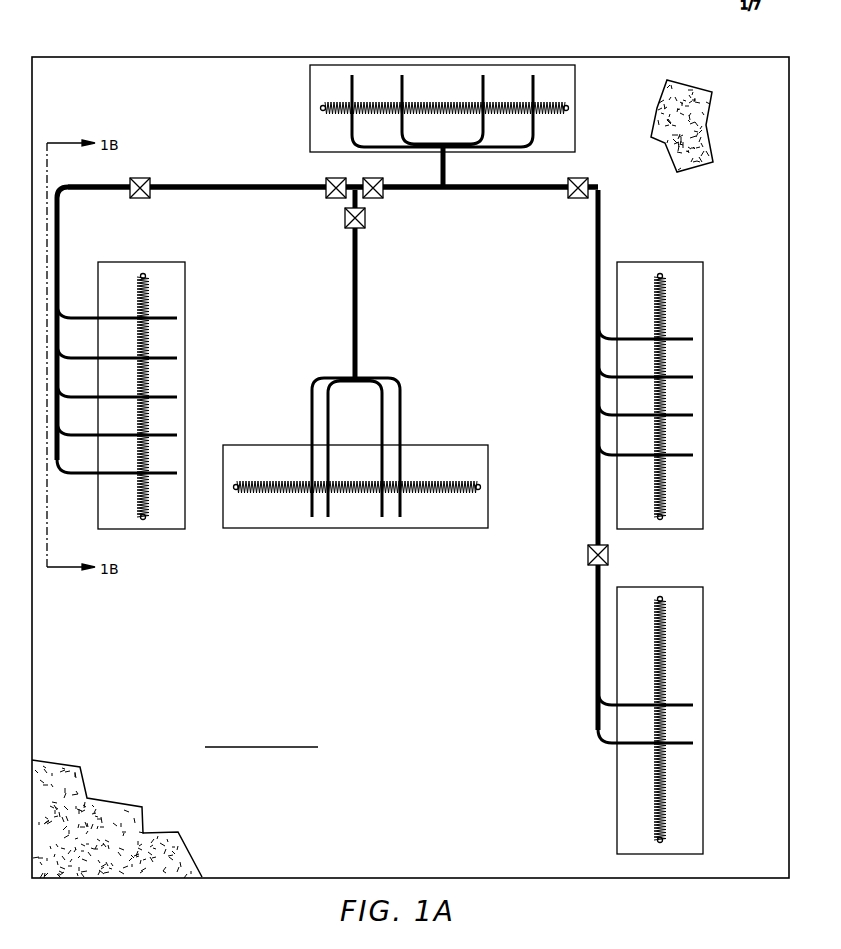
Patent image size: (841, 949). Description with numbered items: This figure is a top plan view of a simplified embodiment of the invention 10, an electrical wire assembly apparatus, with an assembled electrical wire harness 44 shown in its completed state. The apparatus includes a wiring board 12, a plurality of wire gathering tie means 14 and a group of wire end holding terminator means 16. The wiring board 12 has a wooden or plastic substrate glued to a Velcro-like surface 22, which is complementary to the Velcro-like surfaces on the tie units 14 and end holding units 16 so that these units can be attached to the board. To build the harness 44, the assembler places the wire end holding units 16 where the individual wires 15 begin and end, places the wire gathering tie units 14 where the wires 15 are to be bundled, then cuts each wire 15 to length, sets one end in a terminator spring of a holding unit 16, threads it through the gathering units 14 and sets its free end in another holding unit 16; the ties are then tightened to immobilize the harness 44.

The invention 10 is at (609, 36).
The wiring board 12 is at (250, 868).
The wire gathering tie means 14 is at (580, 536).
The individual wires 15 is at (708, 729).
The wire end holding terminator means 16 is at (718, 573).
The Velcro-like surface 22 is at (167, 870).
The electrical wire harness 44 is at (600, 230).